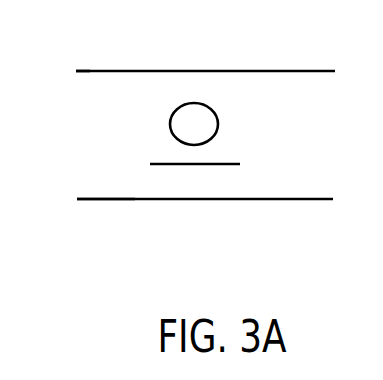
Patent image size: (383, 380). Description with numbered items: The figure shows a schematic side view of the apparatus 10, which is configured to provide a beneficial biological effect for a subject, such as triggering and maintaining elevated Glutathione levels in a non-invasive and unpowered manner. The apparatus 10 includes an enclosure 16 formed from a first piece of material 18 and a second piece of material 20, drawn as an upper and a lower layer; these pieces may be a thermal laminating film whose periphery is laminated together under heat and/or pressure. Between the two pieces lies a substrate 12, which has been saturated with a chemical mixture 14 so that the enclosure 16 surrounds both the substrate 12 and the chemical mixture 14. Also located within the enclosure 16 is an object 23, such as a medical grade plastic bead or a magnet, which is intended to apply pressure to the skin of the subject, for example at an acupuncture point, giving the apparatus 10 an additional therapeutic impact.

The apparatus 10 is at (103, 238).
The substrate 12 is at (228, 164).
The chemical mixture 14 is at (254, 185).
The enclosure 16 is at (83, 71).
The first piece of material 18 is at (220, 71).
The second piece of material 20 is at (212, 199).
The object 23 is at (212, 107).